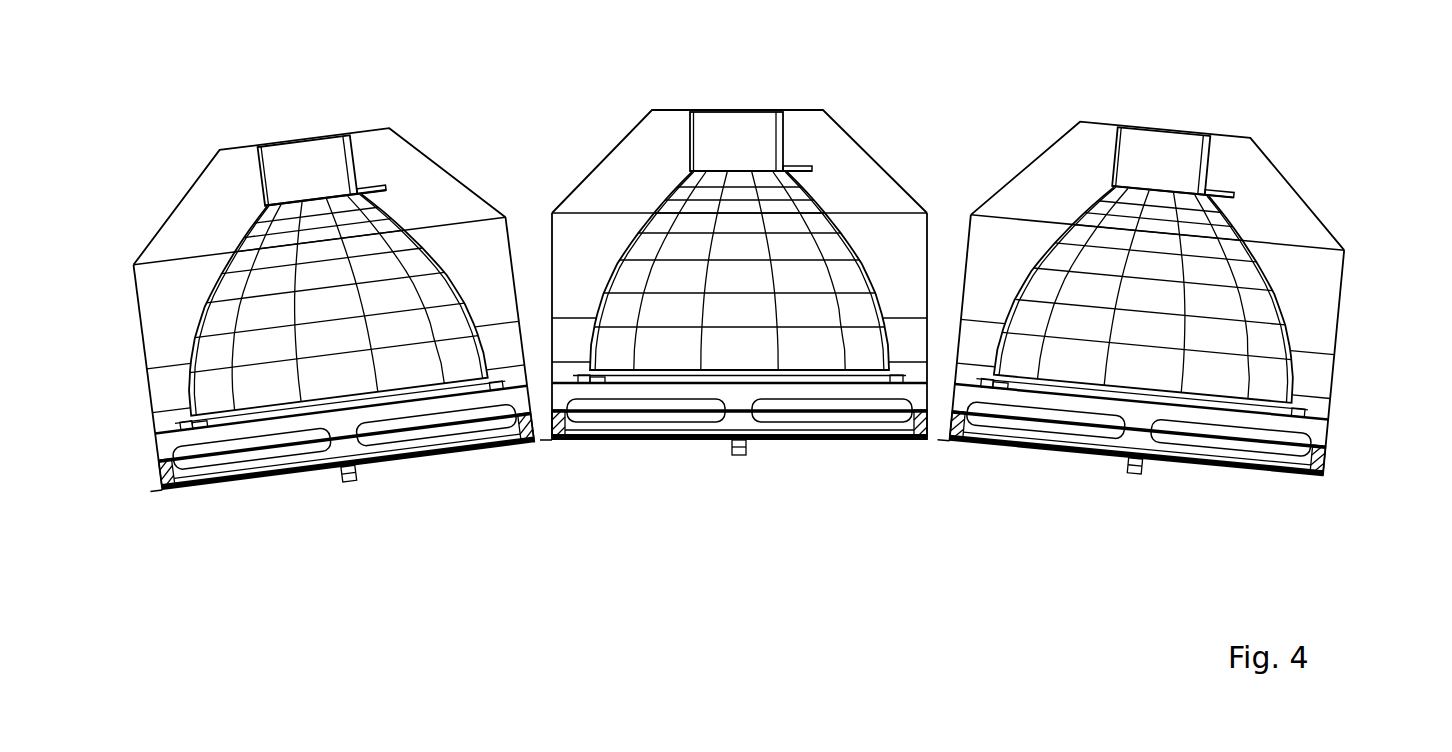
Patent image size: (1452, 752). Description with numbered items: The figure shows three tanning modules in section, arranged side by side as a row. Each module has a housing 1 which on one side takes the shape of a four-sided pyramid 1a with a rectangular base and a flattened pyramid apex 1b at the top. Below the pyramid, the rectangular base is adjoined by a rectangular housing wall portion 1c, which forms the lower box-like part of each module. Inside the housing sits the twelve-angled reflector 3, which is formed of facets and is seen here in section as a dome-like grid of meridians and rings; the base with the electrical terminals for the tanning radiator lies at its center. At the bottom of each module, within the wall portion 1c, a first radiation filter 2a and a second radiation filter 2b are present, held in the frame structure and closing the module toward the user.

The housing 1 is at (1190, 288).
The four-sided pyramid 1a is at (1028, 160).
The flattened pyramid apex 1b is at (1112, 120).
The rectangular housing wall portion 1c is at (1340, 317).
The reflector 3 is at (1272, 273).
The first radiation filter 2a is at (1023, 443).
The second radiation filter 2b is at (1217, 440).